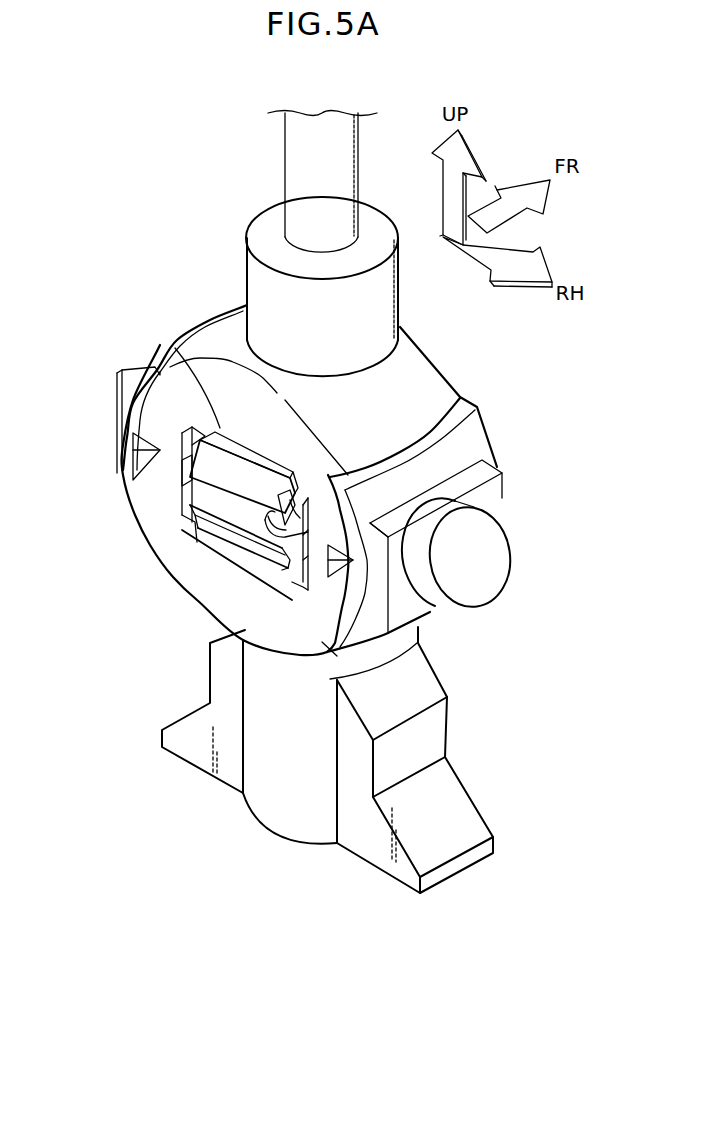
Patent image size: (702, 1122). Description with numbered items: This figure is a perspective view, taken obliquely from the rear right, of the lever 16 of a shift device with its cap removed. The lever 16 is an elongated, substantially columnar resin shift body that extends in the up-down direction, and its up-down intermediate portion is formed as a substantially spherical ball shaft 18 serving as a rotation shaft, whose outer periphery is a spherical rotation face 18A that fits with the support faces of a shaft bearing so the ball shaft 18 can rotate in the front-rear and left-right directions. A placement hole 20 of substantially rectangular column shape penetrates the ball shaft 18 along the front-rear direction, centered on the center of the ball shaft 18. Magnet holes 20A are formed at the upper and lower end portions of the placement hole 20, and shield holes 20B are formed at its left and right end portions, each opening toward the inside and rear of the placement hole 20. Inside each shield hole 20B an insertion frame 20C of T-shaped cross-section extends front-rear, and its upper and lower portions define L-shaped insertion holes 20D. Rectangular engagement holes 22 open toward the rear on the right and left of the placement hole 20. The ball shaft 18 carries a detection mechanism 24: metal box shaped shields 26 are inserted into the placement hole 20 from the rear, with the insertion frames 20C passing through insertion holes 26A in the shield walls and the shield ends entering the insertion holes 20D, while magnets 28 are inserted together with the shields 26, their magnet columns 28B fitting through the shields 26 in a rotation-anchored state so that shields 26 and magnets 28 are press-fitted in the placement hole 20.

The lever 16 is at (262, 205).
The ball shaft 18 is at (420, 378).
The rotation face 18A is at (210, 310).
The placement hole 20 is at (243, 513).
The magnet hole 20A is at (215, 380).
The shield hole 20B is at (185, 470).
The insertion frame 20C is at (187, 497).
The insertion hole 20D is at (187, 487).
The engagement hole 22 is at (137, 447).
The detection mechanism 24 is at (165, 513).
The shield 26 is at (245, 465).
The insertion hole 26A is at (190, 445).
The magnet 28 is at (379, 530).
The magnet column 28B is at (320, 537).